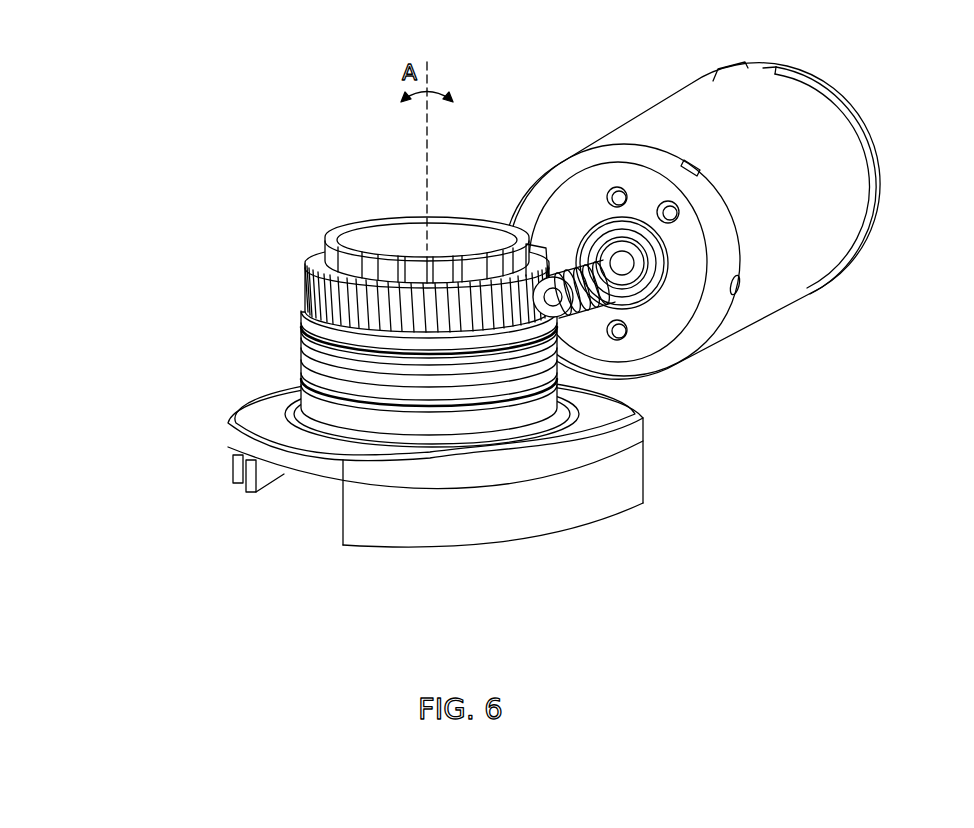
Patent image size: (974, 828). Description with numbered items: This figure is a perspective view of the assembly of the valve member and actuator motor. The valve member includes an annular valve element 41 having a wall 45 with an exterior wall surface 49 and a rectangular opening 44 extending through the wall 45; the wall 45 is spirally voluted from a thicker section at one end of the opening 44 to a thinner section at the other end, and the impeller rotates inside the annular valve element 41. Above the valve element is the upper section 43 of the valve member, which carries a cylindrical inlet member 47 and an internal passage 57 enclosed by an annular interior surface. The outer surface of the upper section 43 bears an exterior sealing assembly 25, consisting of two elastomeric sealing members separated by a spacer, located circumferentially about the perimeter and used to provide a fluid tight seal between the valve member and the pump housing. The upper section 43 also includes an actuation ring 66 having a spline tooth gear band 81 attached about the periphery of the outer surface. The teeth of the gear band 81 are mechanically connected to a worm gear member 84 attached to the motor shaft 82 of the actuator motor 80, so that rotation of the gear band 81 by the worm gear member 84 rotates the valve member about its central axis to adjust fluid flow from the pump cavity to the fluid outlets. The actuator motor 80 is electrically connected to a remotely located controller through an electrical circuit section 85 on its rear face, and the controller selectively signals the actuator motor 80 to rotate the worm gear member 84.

The exterior sealing assembly 25 is at (278, 369).
The annular valve element 41 is at (625, 438).
The upper section 43 is at (393, 225).
The rectangular opening 44 is at (298, 518).
The wall 45 is at (484, 548).
The cylindrical inlet member 47 is at (330, 235).
The exterior wall surface 49 is at (557, 517).
The internal passage 57 is at (372, 246).
The actuation ring 66 is at (330, 337).
The actuator motor 80 is at (730, 201).
The spline tooth gear band 81 is at (305, 287).
The motor shaft 82 is at (620, 287).
The worm gear member 84 is at (555, 317).
The electrical circuit section 85 is at (847, 122).